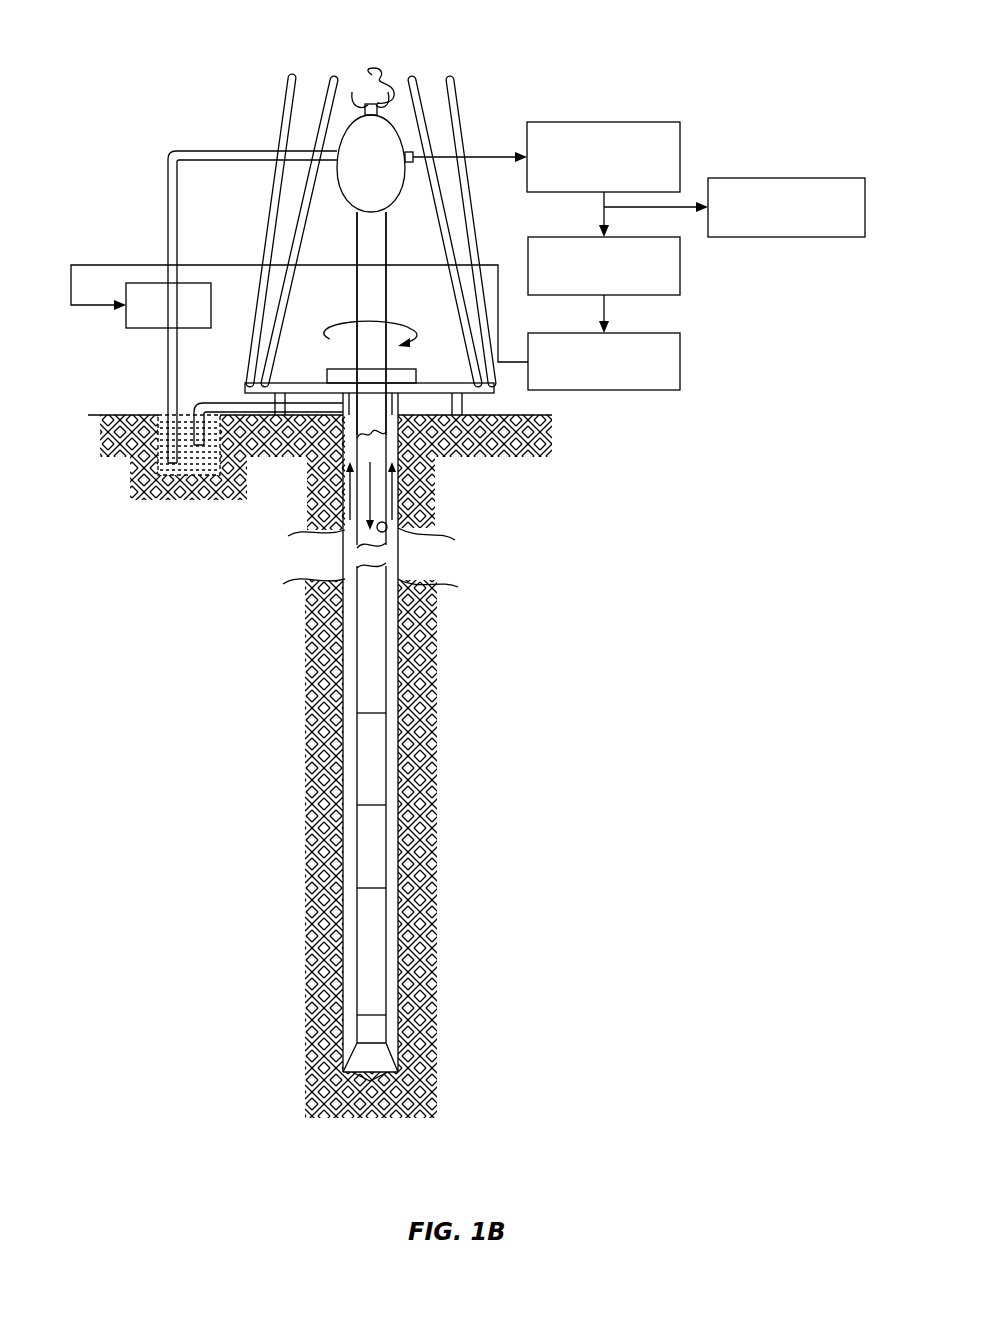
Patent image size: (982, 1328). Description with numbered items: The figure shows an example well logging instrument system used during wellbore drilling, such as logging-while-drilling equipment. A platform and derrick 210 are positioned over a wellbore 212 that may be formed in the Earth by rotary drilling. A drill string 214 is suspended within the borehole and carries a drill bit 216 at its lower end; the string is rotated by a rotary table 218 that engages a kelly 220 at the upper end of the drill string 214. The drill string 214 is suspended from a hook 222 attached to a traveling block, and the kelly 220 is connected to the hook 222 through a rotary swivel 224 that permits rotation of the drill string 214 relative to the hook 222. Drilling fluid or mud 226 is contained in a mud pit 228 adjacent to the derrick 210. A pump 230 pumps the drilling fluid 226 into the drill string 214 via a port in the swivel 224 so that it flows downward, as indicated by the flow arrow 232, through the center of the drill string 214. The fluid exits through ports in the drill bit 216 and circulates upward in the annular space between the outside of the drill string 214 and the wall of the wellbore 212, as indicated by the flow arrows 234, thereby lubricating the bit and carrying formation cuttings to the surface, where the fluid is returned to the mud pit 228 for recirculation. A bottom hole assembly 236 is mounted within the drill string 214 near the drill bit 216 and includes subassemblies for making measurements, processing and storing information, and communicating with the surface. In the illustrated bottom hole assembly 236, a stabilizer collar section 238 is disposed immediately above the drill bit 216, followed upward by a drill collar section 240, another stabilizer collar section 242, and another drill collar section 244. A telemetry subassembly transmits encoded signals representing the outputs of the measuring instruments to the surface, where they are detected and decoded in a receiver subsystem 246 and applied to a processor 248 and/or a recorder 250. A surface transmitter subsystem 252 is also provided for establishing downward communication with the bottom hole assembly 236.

The platform and derrick 210 is at (514, 391).
The wellbore 212 is at (378, 530).
The drill string 214 is at (382, 628).
The drill bit 216 is at (366, 1058).
The rotary table 218 is at (385, 378).
The kelly 220 is at (375, 238).
The hook 222 is at (378, 75).
The rotary swivel 224 is at (365, 148).
The drilling fluid 226 is at (195, 458).
The mud pit 228 is at (157, 442).
The pump 230 is at (160, 283).
The flow arrow 232 is at (385, 508).
The flow arrows 234 is at (390, 497).
The bottom hole assembly 236 is at (455, 1022).
The stabilizer collar section 238 is at (365, 930).
The drill collar section 240 is at (365, 845).
The stabilizer collar section 242 is at (365, 760).
The drill collar section 244 is at (358, 668).
The receiver subsystem 246 is at (617, 122).
The processor 248 is at (680, 280).
The recorder 250 is at (800, 178).
The surface transmitter subsystem 252 is at (680, 367).